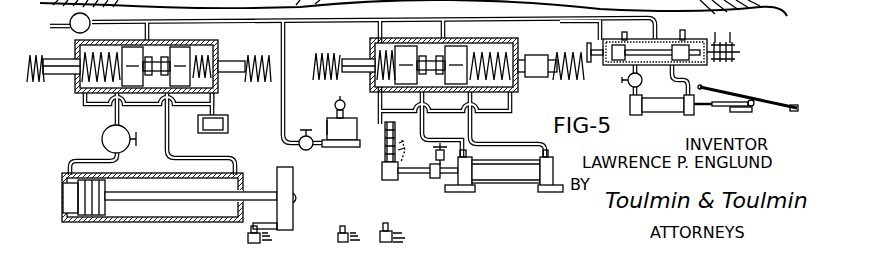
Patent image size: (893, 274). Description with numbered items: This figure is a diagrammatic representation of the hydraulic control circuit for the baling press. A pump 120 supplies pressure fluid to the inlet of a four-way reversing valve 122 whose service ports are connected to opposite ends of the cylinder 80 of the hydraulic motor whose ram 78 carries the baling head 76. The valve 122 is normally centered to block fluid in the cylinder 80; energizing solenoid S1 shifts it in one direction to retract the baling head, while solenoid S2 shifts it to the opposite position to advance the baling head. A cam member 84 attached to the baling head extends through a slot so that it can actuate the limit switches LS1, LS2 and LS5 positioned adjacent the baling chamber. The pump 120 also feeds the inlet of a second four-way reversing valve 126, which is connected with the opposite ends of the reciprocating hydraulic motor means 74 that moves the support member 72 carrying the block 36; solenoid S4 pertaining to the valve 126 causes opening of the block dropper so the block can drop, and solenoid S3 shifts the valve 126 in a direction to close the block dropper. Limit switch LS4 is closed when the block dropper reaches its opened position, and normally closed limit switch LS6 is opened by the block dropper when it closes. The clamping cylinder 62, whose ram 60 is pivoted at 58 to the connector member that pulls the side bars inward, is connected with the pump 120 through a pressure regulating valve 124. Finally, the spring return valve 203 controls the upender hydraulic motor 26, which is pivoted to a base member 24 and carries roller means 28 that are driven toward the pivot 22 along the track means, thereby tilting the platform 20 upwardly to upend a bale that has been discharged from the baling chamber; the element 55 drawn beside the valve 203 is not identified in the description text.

The pump 120 is at (70, 19).
The four-way reversing valve 122 is at (218, 43).
The solenoid S1 is at (36, 83).
The solenoid S2 is at (267, 83).
The four-way reversing valve 126 is at (519, 42).
The solenoid S3 is at (336, 52).
The solenoid S4 is at (575, 82).
The cylinder 55 is at (718, 66).
The spring return valve 203 is at (699, 32).
The hydraulic motor 26 is at (657, 107).
The base member 24 is at (738, 108).
The roller means 28 is at (749, 110).
The platform 20 is at (765, 96).
The pivot 22 is at (793, 104).
The cylinder 80 is at (144, 173).
The ram 78 is at (258, 193).
The baling head 76 is at (293, 200).
The cam member 84 is at (293, 226).
The limit switch LS1 is at (247, 238).
The limit switch LS5 is at (338, 238).
The limit switch LS2 is at (398, 233).
The reciprocating support member 72 is at (392, 181).
The limit switch LS4 is at (405, 162).
The limit switch LS6 is at (437, 144).
The reciprocating hydraulic motor means 74 is at (494, 178).
The block 36 is at (380, 127).
The pivot 58 is at (339, 100).
The ram 60 is at (344, 108).
The cylinder 62 is at (327, 124).
The pressure regulating valve 124 is at (307, 151).